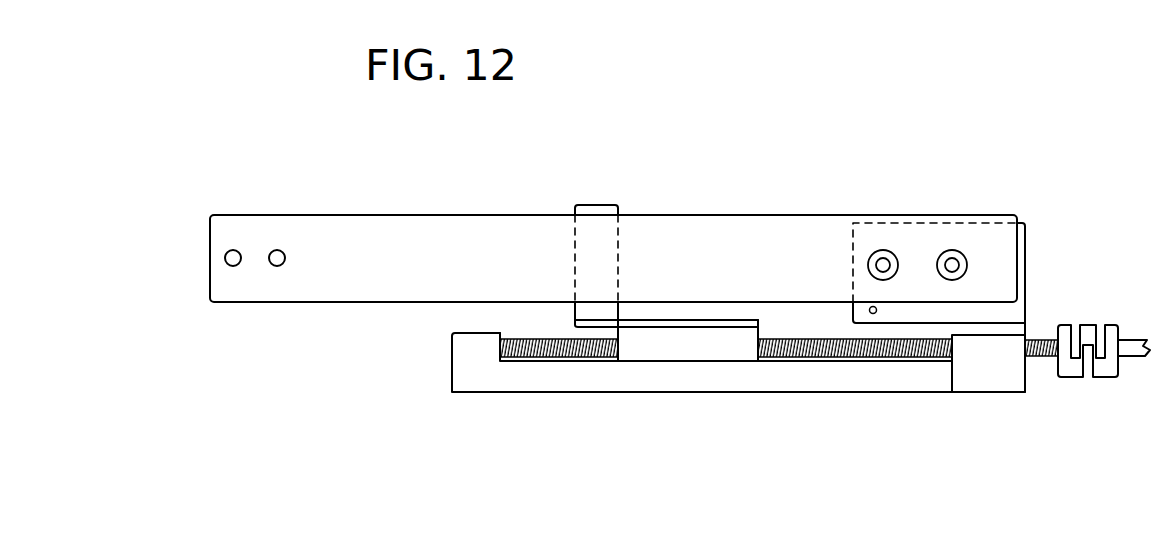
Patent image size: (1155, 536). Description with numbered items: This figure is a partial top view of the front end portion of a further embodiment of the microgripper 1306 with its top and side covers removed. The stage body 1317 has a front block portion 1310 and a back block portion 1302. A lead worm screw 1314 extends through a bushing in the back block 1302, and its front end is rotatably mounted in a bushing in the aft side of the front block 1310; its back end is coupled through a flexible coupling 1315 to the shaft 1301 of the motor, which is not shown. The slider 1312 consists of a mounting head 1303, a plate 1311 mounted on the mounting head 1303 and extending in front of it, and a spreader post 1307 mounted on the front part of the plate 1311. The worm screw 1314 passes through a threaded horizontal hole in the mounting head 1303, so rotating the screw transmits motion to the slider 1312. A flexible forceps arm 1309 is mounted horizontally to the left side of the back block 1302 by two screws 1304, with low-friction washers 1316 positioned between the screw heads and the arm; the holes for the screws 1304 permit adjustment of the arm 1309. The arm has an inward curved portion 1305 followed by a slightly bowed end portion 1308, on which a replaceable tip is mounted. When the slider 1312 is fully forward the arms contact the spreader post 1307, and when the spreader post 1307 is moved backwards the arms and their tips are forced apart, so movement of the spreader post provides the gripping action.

The shaft 1301 is at (1132, 358).
The back block portion 1302 is at (1015, 328).
The mounting head 1303 is at (1018, 310).
The screws 1304 is at (885, 251).
The inward curved portion 1305 is at (812, 230).
The microgripper 1306 is at (720, 207).
The spreader post 1307 is at (598, 205).
The bowed end portions 1308 is at (421, 228).
The forceps arm 1309 is at (341, 247).
The front block portion 1310 is at (473, 350).
The plate 1311 is at (638, 328).
The slider 1312 is at (688, 335).
The lead worm screw 1314 is at (838, 353).
The flexible coupling 1315 is at (1070, 377).
The low-friction washers 1316 is at (877, 251).
The stage body 1317 is at (657, 393).